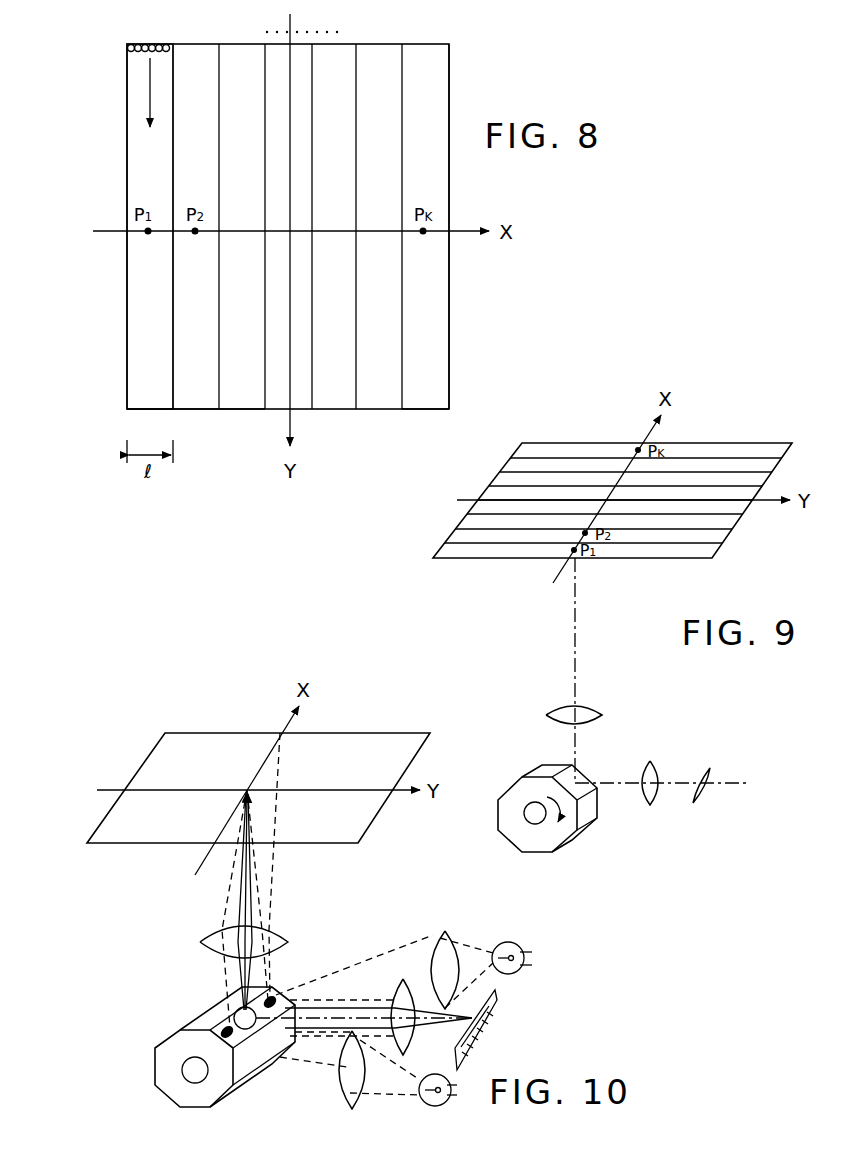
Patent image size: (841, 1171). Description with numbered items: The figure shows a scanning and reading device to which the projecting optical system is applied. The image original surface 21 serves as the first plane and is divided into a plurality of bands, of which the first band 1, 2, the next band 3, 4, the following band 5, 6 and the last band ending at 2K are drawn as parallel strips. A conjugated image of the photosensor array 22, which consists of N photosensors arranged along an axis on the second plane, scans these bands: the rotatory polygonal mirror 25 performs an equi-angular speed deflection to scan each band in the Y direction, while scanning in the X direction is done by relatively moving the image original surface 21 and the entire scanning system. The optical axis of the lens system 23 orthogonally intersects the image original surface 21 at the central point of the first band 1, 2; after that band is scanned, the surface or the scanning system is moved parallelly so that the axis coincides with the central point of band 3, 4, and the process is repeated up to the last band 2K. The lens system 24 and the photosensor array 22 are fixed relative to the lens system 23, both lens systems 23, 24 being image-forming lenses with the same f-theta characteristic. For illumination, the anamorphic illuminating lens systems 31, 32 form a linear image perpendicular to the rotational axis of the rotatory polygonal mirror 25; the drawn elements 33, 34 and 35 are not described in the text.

In FIG. 8, the first band region 1 is at (150, 215).
In FIG. 9, the first band region 1 is at (781, 436).
In FIG. 8, the first band region 2 is at (150, 422).
In FIG. 9, the first band region 2 is at (733, 552).
In FIG. 8, the second band region 3 is at (196, 215).
In FIG. 9, the second band region 3 is at (438, 527).
In FIG. 8, the second band region 4 is at (196, 422).
In FIG. 9, the second band region 4 is at (745, 532).
In FIG. 8, the third band region 5 is at (251, 215).
In FIG. 8, the third band region 6 is at (242, 422).
In FIG. 8, the last band region 2K is at (425, 422).
In FIG. 9, the last band region 2K is at (806, 455).
In FIG. 9, the image original surface 21 is at (691, 443).
In FIG. 10, the image original surface 21 is at (395, 741).
In FIG. 9, the photosensor array 22 is at (703, 800).
In FIG. 10, the photosensor array 22 is at (497, 1019).
In FIG. 9, the lens system 23 is at (586, 712).
In FIG. 10, the lens system 23 is at (275, 936).
In FIG. 9, the lens system 24 is at (647, 804).
In FIG. 10, the lens system 24 is at (395, 995).
In FIG. 9, the rotatory polygonal mirror 25 is at (545, 853).
In FIG. 10, the rotatory polygonal mirror 25 is at (166, 1062).
In FIG. 10, the anamorphic illuminating lens system 31 is at (448, 938).
In FIG. 10, the anamorphic illuminating lens system 32 is at (345, 1092).
In FIG. 10, the photodetector 33 is at (514, 943).
In FIG. 10, the photodetector 34 is at (421, 1104).
In FIG. 10, the reflecting facet of polygon mirror 35 is at (236, 1013).